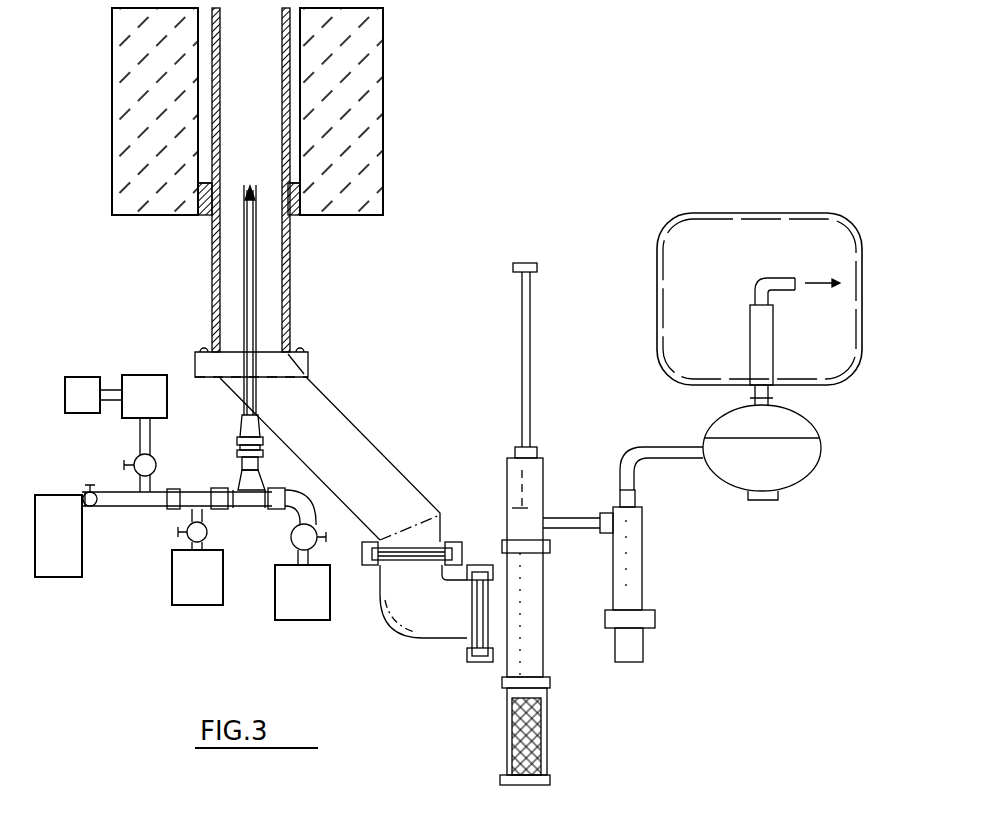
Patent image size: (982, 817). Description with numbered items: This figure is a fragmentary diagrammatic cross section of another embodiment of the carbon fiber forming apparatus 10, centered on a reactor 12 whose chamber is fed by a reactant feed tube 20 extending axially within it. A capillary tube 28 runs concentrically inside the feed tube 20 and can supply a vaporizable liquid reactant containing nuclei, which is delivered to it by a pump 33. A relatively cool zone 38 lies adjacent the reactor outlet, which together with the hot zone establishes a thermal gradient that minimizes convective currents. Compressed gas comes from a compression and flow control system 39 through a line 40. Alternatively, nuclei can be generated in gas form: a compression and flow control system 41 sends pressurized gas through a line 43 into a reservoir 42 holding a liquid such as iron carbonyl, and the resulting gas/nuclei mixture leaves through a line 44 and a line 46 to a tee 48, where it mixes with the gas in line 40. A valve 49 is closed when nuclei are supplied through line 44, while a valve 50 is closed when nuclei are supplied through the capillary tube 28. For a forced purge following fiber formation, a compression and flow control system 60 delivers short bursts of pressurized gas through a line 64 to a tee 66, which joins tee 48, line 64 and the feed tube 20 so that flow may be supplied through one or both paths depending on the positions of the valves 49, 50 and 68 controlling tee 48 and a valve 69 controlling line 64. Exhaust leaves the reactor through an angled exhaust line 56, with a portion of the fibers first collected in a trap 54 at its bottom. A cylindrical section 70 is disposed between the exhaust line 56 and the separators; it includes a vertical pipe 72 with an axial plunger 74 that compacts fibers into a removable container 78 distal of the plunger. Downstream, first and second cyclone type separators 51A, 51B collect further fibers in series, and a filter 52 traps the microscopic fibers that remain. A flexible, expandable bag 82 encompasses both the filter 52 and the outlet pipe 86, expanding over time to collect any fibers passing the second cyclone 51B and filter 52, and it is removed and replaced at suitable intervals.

The apparatus 10 is at (128, 660).
The reactor 12 is at (290, 80).
The reactant feed tube 20 is at (258, 296).
The capillary tube 28 is at (245, 255).
The pump 33 is at (52, 578).
The cool zone 38 is at (212, 118).
The compression and flow control system 39 is at (212, 606).
The line 40 is at (165, 506).
The compression and flow control system 41 is at (65, 378).
The reservoir 42 is at (150, 374).
The line 43 is at (108, 390).
The line 44 is at (135, 430).
The line 46 is at (170, 489).
The tee 48 is at (208, 486).
The valve 49 is at (92, 508).
The valve 50 is at (156, 460).
The first cyclone type separator 51A is at (646, 585).
The second cyclone type separator 51B is at (815, 468).
The filter 52 is at (770, 358).
The trap 54 is at (458, 540).
The angled exhaust line 56 is at (350, 440).
The compression and flow control system 60 is at (318, 620).
The line 64 is at (313, 507).
The tee 66 is at (253, 510).
The valve 68 is at (185, 540).
The valve 69 is at (322, 548).
The cylindrical section 70 is at (515, 790).
The vertical pipe 72 is at (546, 655).
The axial plunger 74 is at (520, 310).
The removable container 78 is at (550, 738).
The bag 82 is at (698, 213).
The outlet pipe 86 is at (772, 278).